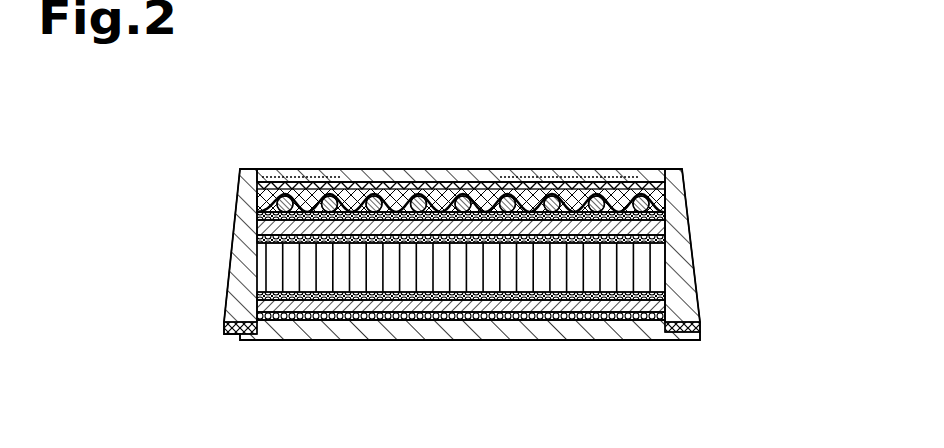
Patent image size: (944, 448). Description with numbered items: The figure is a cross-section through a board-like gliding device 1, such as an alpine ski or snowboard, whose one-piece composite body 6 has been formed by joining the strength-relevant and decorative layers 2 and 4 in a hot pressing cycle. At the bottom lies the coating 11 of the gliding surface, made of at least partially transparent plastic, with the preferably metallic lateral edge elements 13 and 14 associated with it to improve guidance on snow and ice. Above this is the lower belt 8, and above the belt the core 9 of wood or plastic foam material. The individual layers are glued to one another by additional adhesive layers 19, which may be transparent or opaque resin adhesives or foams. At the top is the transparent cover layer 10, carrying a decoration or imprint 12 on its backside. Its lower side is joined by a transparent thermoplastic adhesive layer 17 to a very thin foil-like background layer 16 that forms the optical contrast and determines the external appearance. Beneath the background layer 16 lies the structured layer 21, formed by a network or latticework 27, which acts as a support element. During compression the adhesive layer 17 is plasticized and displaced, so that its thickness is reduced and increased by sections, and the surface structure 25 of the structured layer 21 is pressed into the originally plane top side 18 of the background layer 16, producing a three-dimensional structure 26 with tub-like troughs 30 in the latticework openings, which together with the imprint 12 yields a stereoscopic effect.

The gliding device 1 is at (705, 138).
The layer 2 is at (698, 168).
The layer 4 is at (677, 304).
The composite body 6 is at (688, 215).
The lower belt 8 is at (457, 322).
The core 9 is at (645, 265).
The cover layer 10 is at (333, 173).
The coating of the gliding surface 11 is at (392, 325).
The imprint 12 is at (625, 185).
The lateral edge element 13 is at (227, 328).
The lateral edge element 14 is at (700, 328).
The background layer 16 is at (482, 183).
The adhesive layer 17 is at (528, 185).
The top side 18 is at (352, 183).
The adhesive layers 19 is at (575, 185).
The structured layer 21 is at (258, 208).
The surface structure 25 is at (281, 186).
The three-dimensional structure 26 is at (403, 186).
The latticework 27 is at (320, 186).
The troughs 30 is at (440, 186).